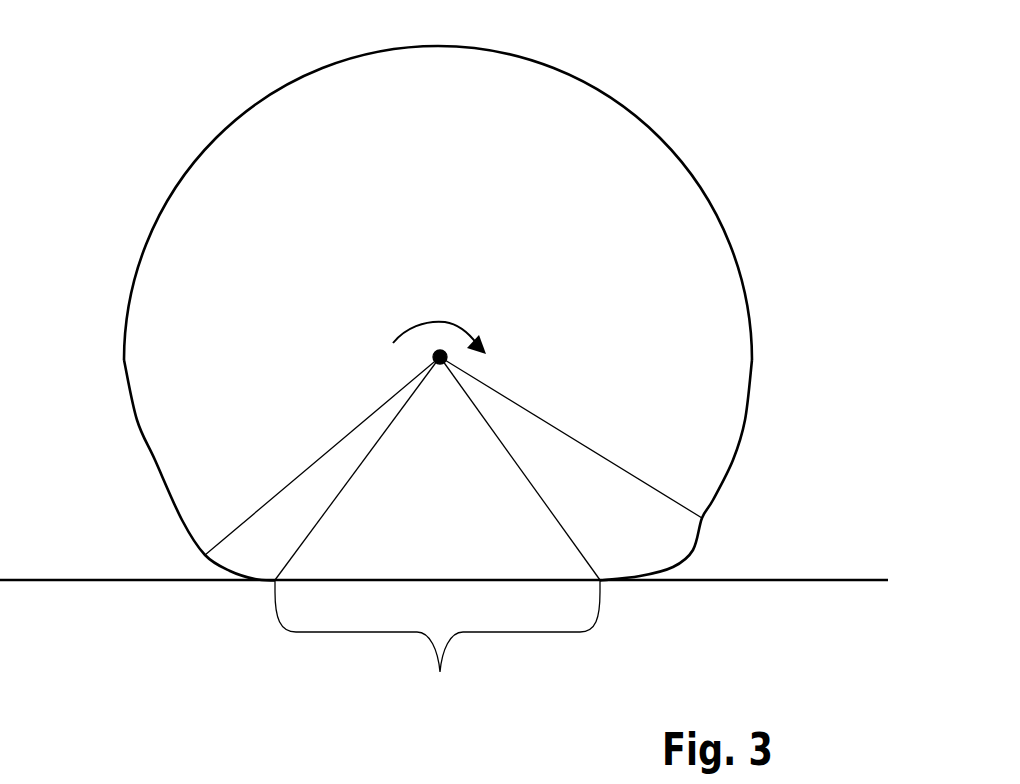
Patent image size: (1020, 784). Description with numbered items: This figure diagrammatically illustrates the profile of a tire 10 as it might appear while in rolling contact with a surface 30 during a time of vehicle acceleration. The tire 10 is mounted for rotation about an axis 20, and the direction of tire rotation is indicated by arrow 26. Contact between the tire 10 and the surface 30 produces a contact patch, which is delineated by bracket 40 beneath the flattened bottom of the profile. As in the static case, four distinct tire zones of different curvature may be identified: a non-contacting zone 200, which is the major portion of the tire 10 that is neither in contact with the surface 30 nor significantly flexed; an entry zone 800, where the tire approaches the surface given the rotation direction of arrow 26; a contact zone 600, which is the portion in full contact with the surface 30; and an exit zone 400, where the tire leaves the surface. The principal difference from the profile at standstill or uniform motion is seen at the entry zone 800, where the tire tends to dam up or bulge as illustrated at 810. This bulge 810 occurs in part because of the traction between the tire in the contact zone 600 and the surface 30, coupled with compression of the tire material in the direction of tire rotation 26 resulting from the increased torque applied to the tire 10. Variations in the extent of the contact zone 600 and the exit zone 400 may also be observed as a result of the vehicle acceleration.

The tire 10 is at (677, 150).
The axis 20 is at (433, 358).
The arrow indicating direction of tire rotation 26 is at (455, 325).
The surface 30 is at (802, 580).
The bracket 40 is at (277, 612).
The non-contacting zone 200 is at (370, 209).
The exit zone 400 is at (295, 539).
The contact zone 600 is at (440, 539).
The entry zone 800 is at (642, 537).
The bulge 810 is at (693, 555).